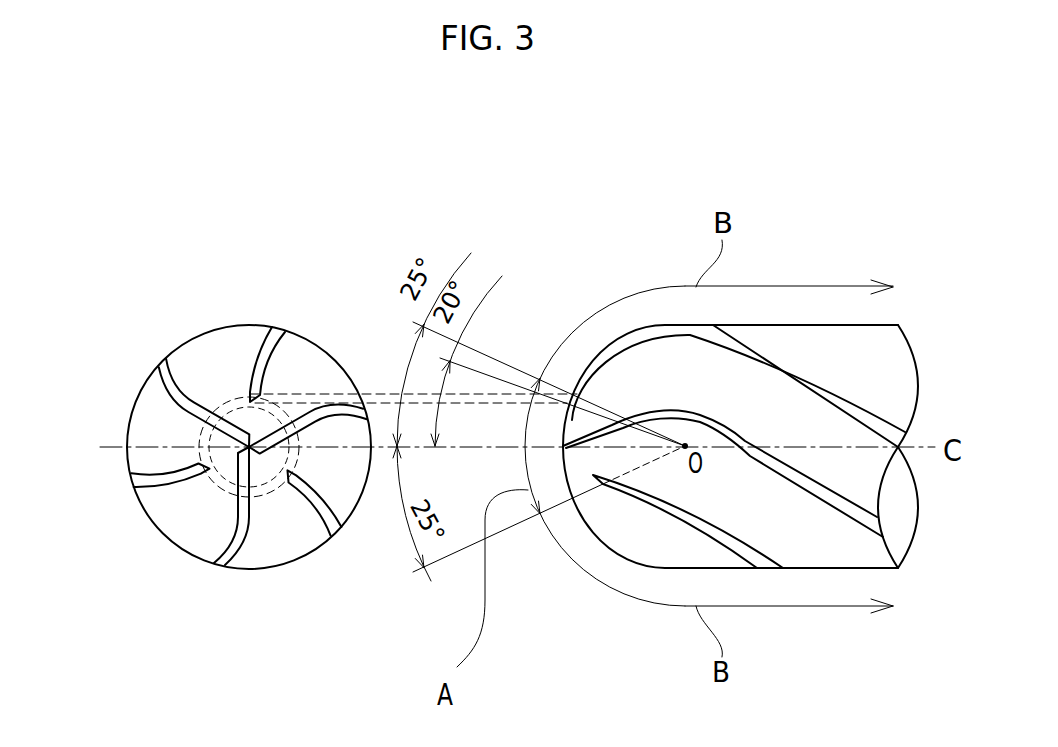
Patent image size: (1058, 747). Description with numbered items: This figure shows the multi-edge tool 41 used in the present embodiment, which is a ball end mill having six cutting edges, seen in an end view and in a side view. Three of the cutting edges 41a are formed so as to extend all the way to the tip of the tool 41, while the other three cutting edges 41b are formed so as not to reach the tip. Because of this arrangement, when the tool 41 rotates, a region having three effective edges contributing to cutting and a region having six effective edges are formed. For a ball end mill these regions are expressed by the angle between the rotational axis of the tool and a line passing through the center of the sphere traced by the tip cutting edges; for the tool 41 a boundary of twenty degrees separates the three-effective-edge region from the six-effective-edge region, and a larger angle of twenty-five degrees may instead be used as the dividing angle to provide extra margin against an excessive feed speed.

The tool 41 is at (178, 197).
The cutting edges 41a is at (296, 410).
The cutting edges 41b is at (252, 387).